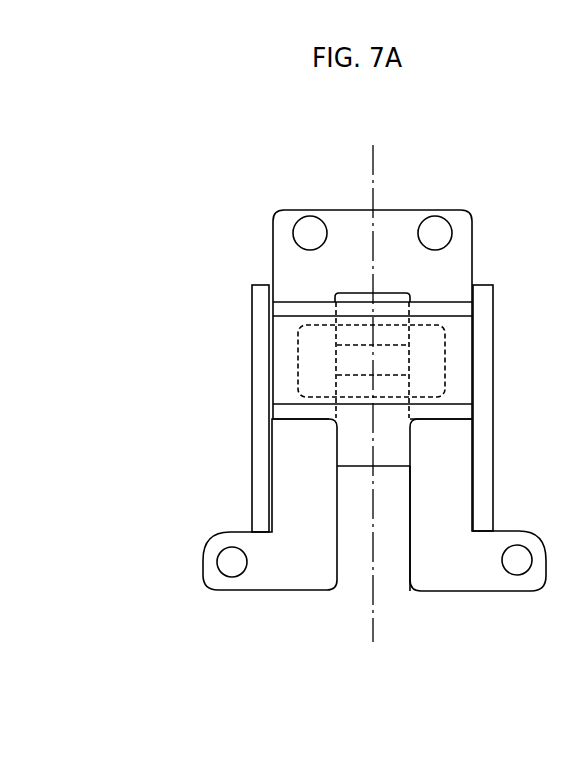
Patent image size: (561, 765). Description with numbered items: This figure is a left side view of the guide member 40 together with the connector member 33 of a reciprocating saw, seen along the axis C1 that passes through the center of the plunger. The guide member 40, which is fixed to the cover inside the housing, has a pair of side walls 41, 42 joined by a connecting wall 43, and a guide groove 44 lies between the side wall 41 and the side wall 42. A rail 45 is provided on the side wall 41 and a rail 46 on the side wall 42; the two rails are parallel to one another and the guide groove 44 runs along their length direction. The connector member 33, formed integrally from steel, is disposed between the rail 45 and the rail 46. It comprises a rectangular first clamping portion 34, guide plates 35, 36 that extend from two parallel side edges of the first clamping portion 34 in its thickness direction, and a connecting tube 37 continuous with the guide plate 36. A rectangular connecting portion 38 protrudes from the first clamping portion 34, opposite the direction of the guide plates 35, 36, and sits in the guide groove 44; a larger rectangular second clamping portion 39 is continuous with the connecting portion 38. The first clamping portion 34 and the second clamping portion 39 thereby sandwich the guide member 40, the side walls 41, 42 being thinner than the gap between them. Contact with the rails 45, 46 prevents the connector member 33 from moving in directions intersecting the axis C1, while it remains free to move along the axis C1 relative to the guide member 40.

The guide member 40 is at (460, 620).
The axis C1 is at (374, 155).
The connecting wall 43 is at (350, 228).
The connector member 33 is at (318, 293).
The guide plate 35 is at (297, 313).
The second clamping portion 39 is at (320, 360).
The connecting portion 38 is at (395, 362).
The first clamping portion 34 is at (460, 347).
The rail 45 is at (262, 393).
The rail 46 is at (485, 377).
The guide plate 36 is at (298, 413).
The connecting tube 37 is at (355, 447).
The side wall 41 is at (303, 502).
The side wall 42 is at (445, 455).
The guide groove 44 is at (397, 525).